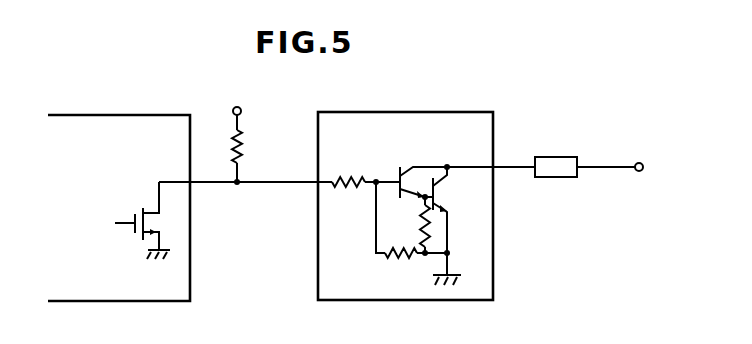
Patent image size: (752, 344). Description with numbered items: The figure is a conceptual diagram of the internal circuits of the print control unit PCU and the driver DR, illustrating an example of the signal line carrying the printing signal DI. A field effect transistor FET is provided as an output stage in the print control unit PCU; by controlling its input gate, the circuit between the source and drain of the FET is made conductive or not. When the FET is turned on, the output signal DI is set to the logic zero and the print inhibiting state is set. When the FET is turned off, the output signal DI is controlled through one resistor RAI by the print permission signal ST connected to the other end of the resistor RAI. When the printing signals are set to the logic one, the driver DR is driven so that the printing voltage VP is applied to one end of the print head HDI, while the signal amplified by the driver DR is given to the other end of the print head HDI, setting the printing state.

The print control unit PCU is at (119, 208).
The field effect transistor FET is at (137, 220).
The printing signal DI is at (245, 175).
The resistor RAI is at (252, 148).
The print permission signal ST is at (236, 101).
The driver DR is at (426, 206).
The print head HDI is at (585, 155).
The printing voltage VP is at (651, 168).